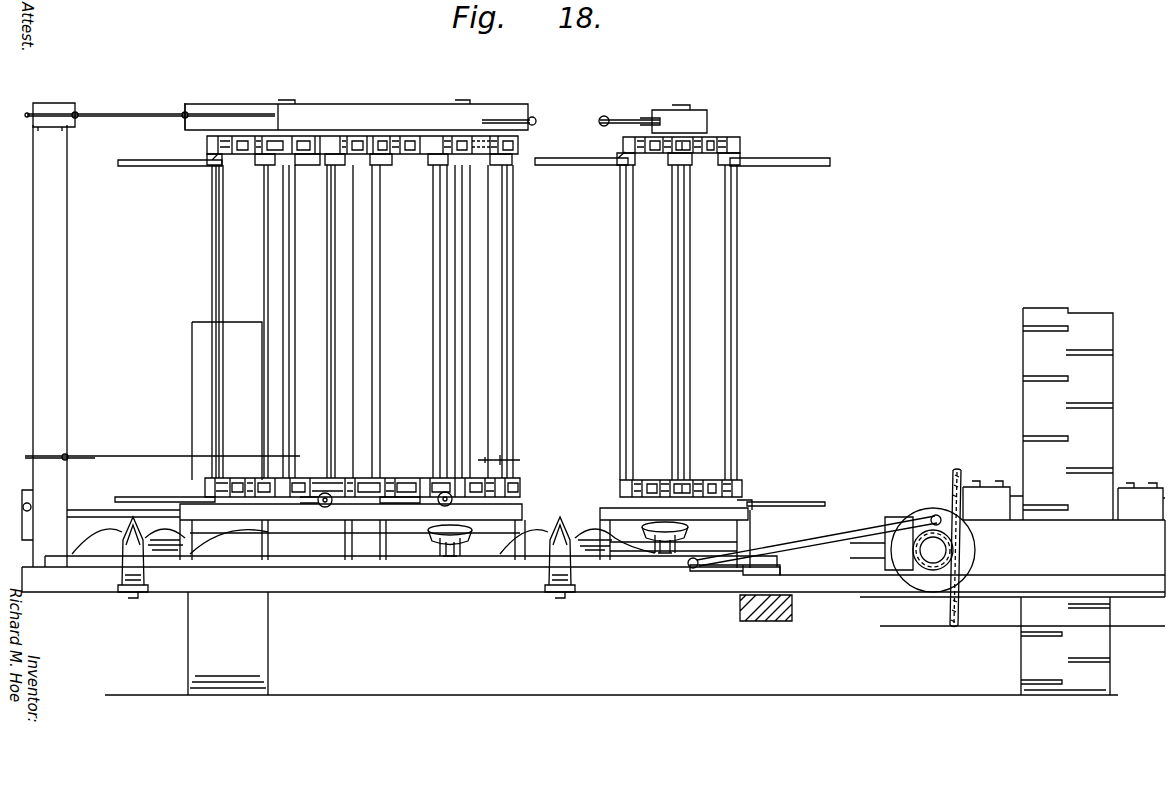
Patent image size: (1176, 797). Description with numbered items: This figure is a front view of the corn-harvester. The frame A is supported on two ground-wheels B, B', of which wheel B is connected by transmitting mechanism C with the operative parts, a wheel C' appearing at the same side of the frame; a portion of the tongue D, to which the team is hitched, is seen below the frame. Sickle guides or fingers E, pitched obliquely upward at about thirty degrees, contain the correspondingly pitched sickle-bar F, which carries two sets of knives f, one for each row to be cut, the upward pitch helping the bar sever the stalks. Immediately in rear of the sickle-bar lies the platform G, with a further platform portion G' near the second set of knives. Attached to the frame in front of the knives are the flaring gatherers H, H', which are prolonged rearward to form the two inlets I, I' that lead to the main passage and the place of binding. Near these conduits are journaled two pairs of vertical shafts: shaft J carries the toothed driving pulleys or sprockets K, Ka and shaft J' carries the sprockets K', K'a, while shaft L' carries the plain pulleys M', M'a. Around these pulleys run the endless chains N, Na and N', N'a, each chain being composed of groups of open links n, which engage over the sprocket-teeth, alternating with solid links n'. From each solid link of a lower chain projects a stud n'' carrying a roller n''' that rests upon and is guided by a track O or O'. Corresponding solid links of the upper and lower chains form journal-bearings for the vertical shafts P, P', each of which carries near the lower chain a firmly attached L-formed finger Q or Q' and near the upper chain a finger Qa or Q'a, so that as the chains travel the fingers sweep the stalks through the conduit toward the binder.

The frame A is at (593, 367).
The ground-wheel B is at (1067, 488).
The ground-wheel B' is at (228, 643).
The transmitting mechanism C is at (665, 575).
The wheel C' is at (933, 548).
The tongue D is at (766, 618).
The sickle guides or fingers E is at (128, 525).
The sickle-bar F is at (323, 567).
The knives f is at (145, 550).
The platform G is at (272, 577).
The guard arc G' is at (577, 508).
The flaring gatherer H is at (569, 272).
The flaring gatherer H' is at (162, 270).
The inlet I is at (562, 266).
The inlet I' is at (142, 346).
The vertical shaft J is at (679, 107).
The vertical shaft J' is at (463, 90).
The toothed driving pulley or sprocket K is at (735, 466).
The toothed driving pulley or sprocket K' is at (428, 480).
The toothed driving pulley or sprocket Ka is at (717, 139).
The toothed driving pulley or sprocket K'a is at (415, 172).
The vertical shaft L' is at (287, 91).
The plain pulley M' is at (315, 480).
The plain pulley M'a is at (241, 170).
The endless chain N is at (681, 475).
The endless chain N' is at (375, 466).
The endless chain Na is at (698, 156).
The endless chain N'a is at (362, 123).
The open link n is at (304, 163).
The solid link n' is at (180, 479).
The stud n'' is at (472, 490).
The roller n''' is at (554, 512).
The track O is at (692, 534).
The track O' is at (296, 560).
The vertical shaft P is at (691, 322).
The vertical shaft P' is at (378, 321).
The L-formed finger Q is at (794, 506).
The L-formed finger Q' is at (163, 488).
The finger Qa is at (697, 163).
The finger Q'a is at (160, 155).